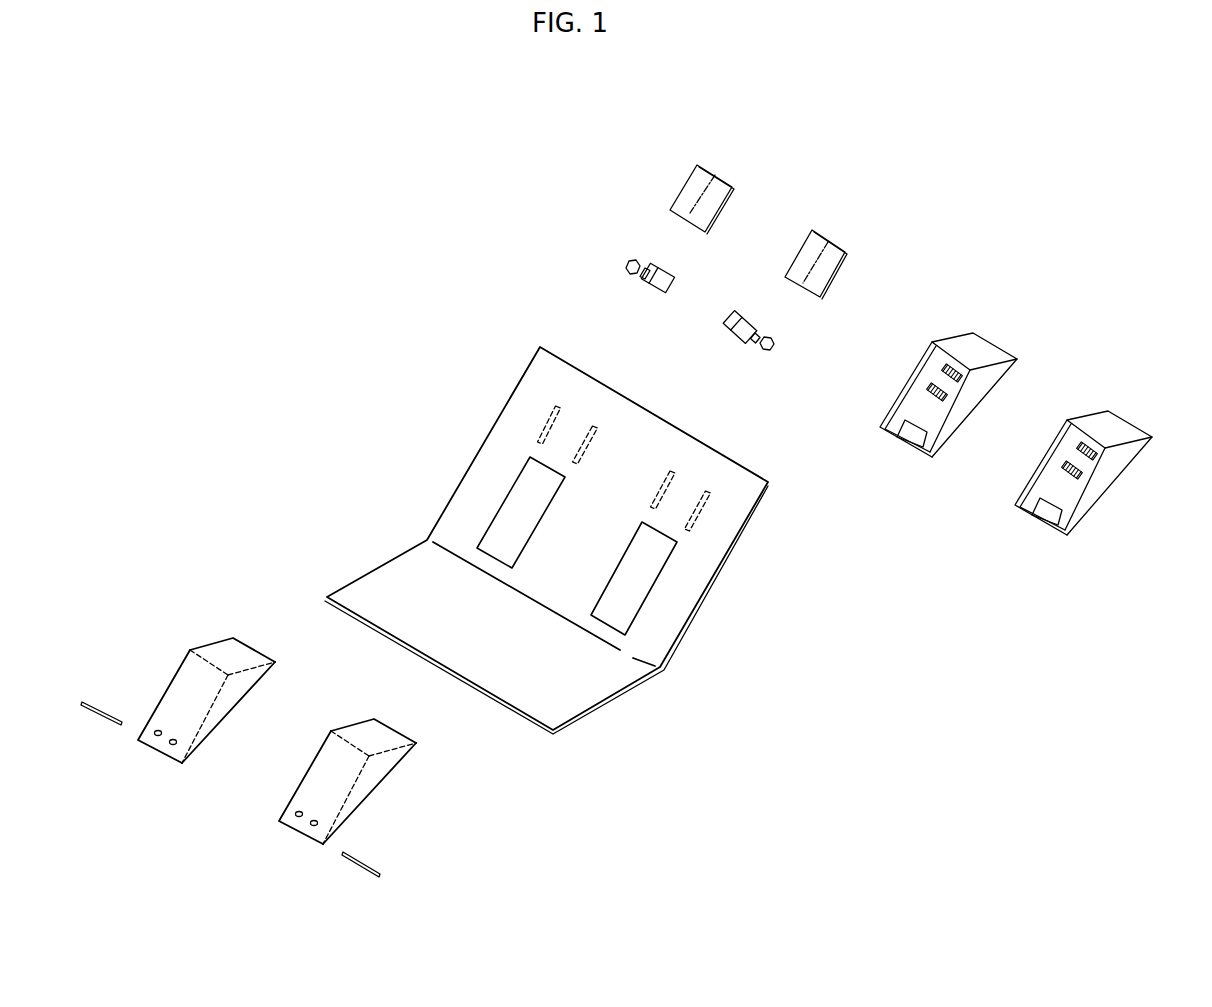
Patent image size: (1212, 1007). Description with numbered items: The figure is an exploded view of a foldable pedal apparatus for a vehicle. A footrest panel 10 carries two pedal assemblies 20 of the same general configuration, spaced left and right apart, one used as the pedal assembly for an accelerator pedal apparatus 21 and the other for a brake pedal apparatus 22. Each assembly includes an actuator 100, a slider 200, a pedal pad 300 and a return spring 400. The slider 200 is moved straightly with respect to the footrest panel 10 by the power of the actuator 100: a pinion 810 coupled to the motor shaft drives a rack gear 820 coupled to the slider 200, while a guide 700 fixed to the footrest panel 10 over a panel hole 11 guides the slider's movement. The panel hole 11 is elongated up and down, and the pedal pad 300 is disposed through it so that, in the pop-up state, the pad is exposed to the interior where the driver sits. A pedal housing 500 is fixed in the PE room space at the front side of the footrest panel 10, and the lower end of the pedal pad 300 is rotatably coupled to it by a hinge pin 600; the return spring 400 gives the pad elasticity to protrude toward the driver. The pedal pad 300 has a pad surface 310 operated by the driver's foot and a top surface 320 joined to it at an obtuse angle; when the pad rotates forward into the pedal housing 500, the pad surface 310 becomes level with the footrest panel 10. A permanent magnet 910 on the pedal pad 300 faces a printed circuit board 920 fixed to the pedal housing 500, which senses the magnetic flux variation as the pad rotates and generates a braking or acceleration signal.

The footrest panel 10 is at (457, 520).
The panel hole 11 is at (512, 515).
The pedal assembly 20 is at (261, 743).
The accelerator pedal apparatus 21 is at (360, 836).
The brake pedal apparatus 22 is at (210, 638).
The actuator 100 is at (677, 283).
The slider 200 is at (723, 188).
The pedal pad 300 is at (395, 790).
The pad surface 310 is at (177, 693).
The top surface 320 is at (245, 648).
The return spring 400 is at (930, 385).
The pedal housing 500 is at (950, 422).
The hinge pin 600 is at (92, 700).
The guide 700 is at (585, 440).
The pinion 810 is at (626, 266).
The rack gear 820 is at (680, 197).
The permanent magnet 910 is at (169, 742).
The Printed Circuit Board (PCB) 920 is at (912, 433).